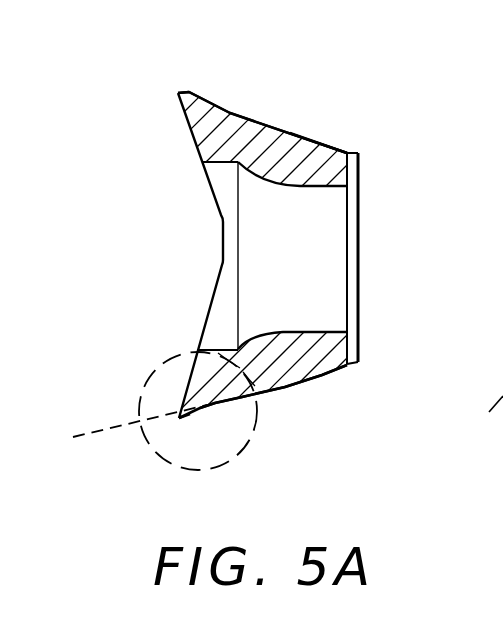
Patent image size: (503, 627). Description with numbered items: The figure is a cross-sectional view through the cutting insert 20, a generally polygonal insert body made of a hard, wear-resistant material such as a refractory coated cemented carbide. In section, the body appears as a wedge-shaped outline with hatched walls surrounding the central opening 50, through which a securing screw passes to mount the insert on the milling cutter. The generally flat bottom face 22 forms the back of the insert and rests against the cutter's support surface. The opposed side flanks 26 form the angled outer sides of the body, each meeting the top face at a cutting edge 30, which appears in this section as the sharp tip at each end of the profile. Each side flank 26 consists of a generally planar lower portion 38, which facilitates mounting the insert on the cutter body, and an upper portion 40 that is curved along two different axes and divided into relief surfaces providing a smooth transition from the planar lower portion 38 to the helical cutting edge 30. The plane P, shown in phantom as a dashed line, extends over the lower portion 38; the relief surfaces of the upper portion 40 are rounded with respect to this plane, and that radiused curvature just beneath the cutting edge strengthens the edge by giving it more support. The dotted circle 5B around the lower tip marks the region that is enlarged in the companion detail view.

The cutting insert 20 is at (170, 189).
The bottom face 22 is at (361, 313).
The side flanks 26 is at (318, 142).
The cutting edge 30 is at (188, 86).
The planar lower portion 38 is at (264, 120).
The upper portion 40 is at (220, 95).
The central opening 50 is at (325, 233).
The enlarged detail section 5B is at (156, 362).
The plane P is at (110, 428).